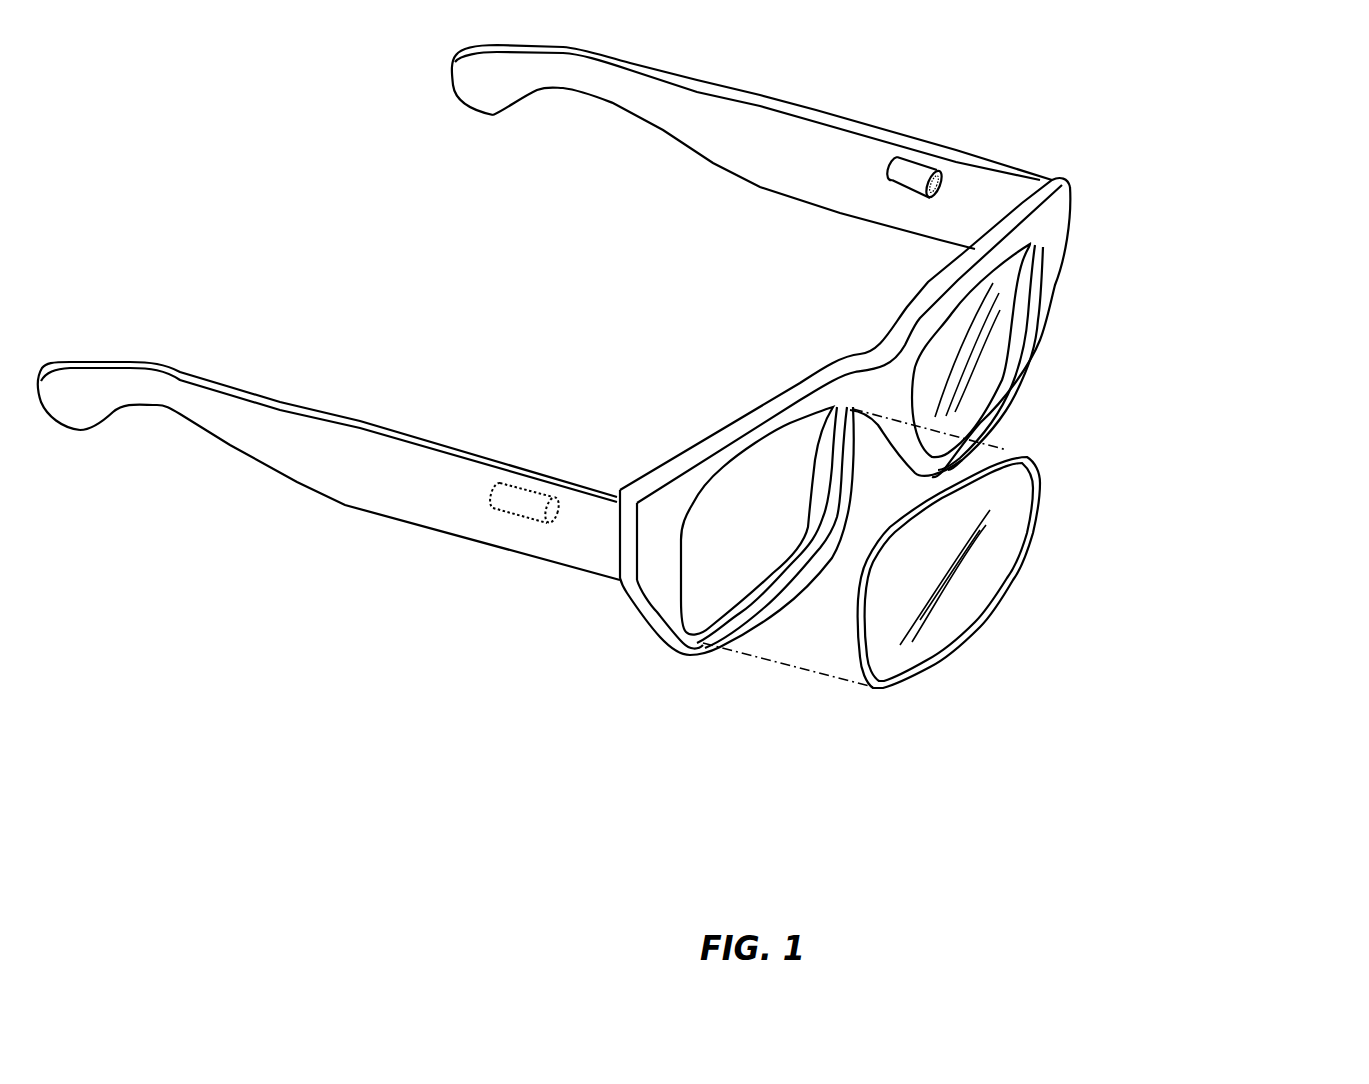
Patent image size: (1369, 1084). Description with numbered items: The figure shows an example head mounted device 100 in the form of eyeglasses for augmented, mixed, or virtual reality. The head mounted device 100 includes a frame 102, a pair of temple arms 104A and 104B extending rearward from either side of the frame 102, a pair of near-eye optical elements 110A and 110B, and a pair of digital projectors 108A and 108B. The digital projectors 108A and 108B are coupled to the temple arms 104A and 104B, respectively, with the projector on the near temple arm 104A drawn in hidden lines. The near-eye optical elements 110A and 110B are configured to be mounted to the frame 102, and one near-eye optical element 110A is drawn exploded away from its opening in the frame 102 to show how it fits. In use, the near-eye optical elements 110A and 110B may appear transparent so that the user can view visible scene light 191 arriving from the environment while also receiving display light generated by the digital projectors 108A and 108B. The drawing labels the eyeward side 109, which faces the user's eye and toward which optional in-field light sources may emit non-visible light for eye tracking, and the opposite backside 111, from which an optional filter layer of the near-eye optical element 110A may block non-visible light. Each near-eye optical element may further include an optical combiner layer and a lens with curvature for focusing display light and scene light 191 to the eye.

The head mounted device 100 is at (1300, 160).
The frame 102 is at (890, 400).
The temple arm 104A is at (433, 499).
The temple arm 104B is at (790, 159).
The digital projector 108A is at (517, 498).
The digital projector 108B is at (935, 170).
The eyeward side 109 is at (683, 398).
The near-eye optical element 110A is at (873, 688).
The near-eye optical element 110B is at (1022, 340).
The backside 111 is at (1054, 679).
The scene light 191 is at (1072, 405).